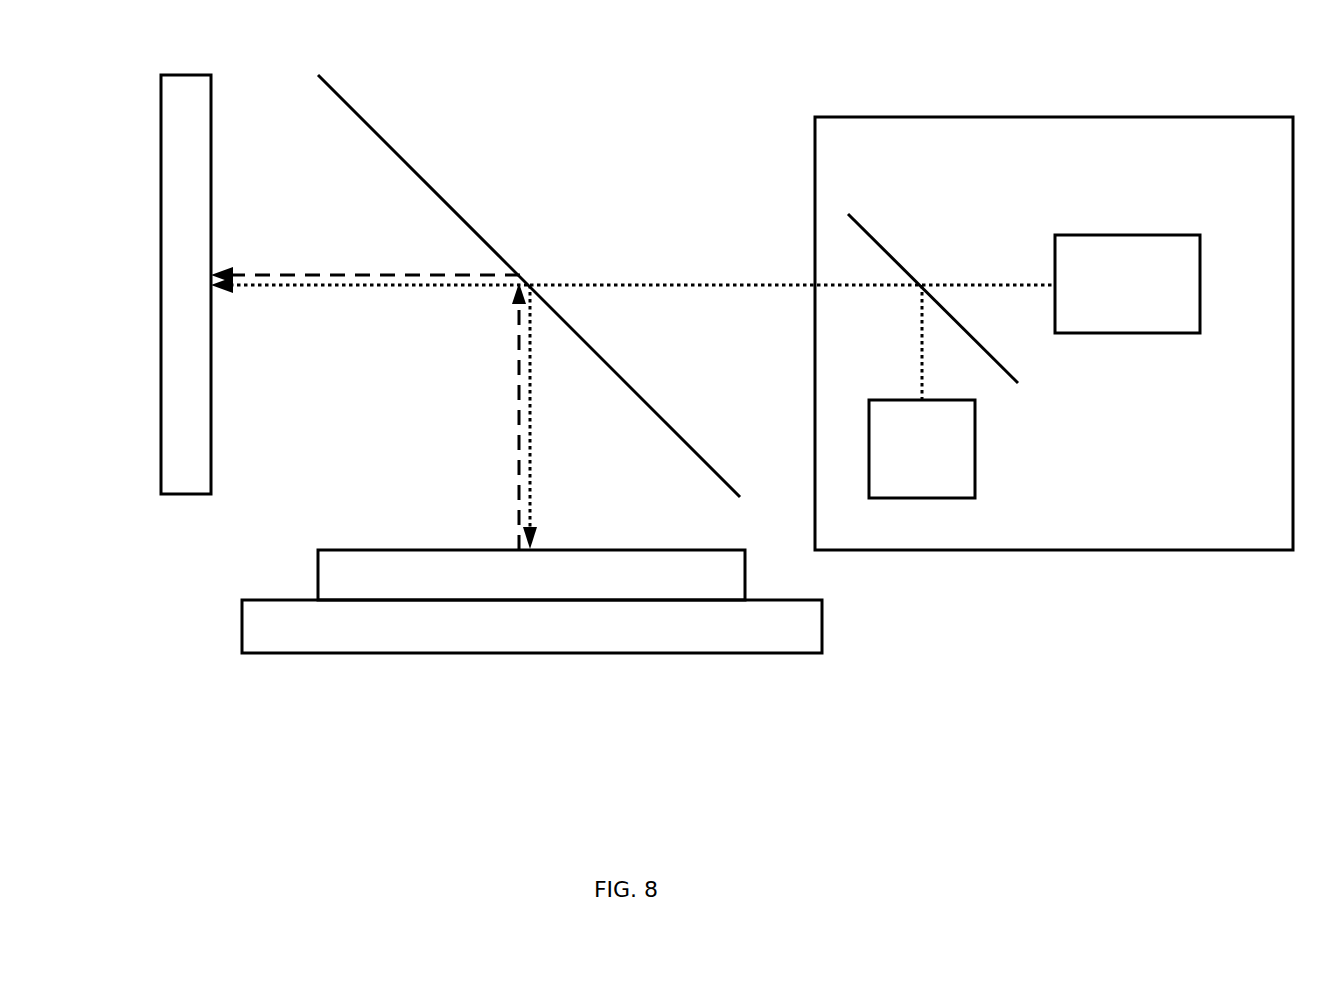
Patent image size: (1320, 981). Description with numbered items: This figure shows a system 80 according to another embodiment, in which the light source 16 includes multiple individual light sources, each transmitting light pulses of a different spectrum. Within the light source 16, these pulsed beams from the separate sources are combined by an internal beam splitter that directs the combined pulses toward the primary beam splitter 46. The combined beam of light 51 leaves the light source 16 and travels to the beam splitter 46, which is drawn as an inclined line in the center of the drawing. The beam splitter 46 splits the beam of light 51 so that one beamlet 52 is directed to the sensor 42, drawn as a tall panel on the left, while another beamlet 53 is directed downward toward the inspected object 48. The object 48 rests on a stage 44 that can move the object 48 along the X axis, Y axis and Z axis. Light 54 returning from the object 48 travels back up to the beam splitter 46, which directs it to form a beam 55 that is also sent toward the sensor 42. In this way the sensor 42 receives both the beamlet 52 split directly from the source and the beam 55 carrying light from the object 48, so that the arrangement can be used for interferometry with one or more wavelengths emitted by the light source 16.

The sensor 42 is at (172, 295).
The beam splitter 46 is at (340, 92).
The beamlet 52 is at (338, 275).
The beam 55 is at (317, 288).
The beam of light 51 is at (635, 280).
The light from the object 54 is at (520, 422).
The beamlet 53 is at (533, 387).
The inspected object 48 is at (518, 587).
The stage 44 is at (518, 637).
The light source 16 is at (1042, 520).
The system 80 is at (436, 782).